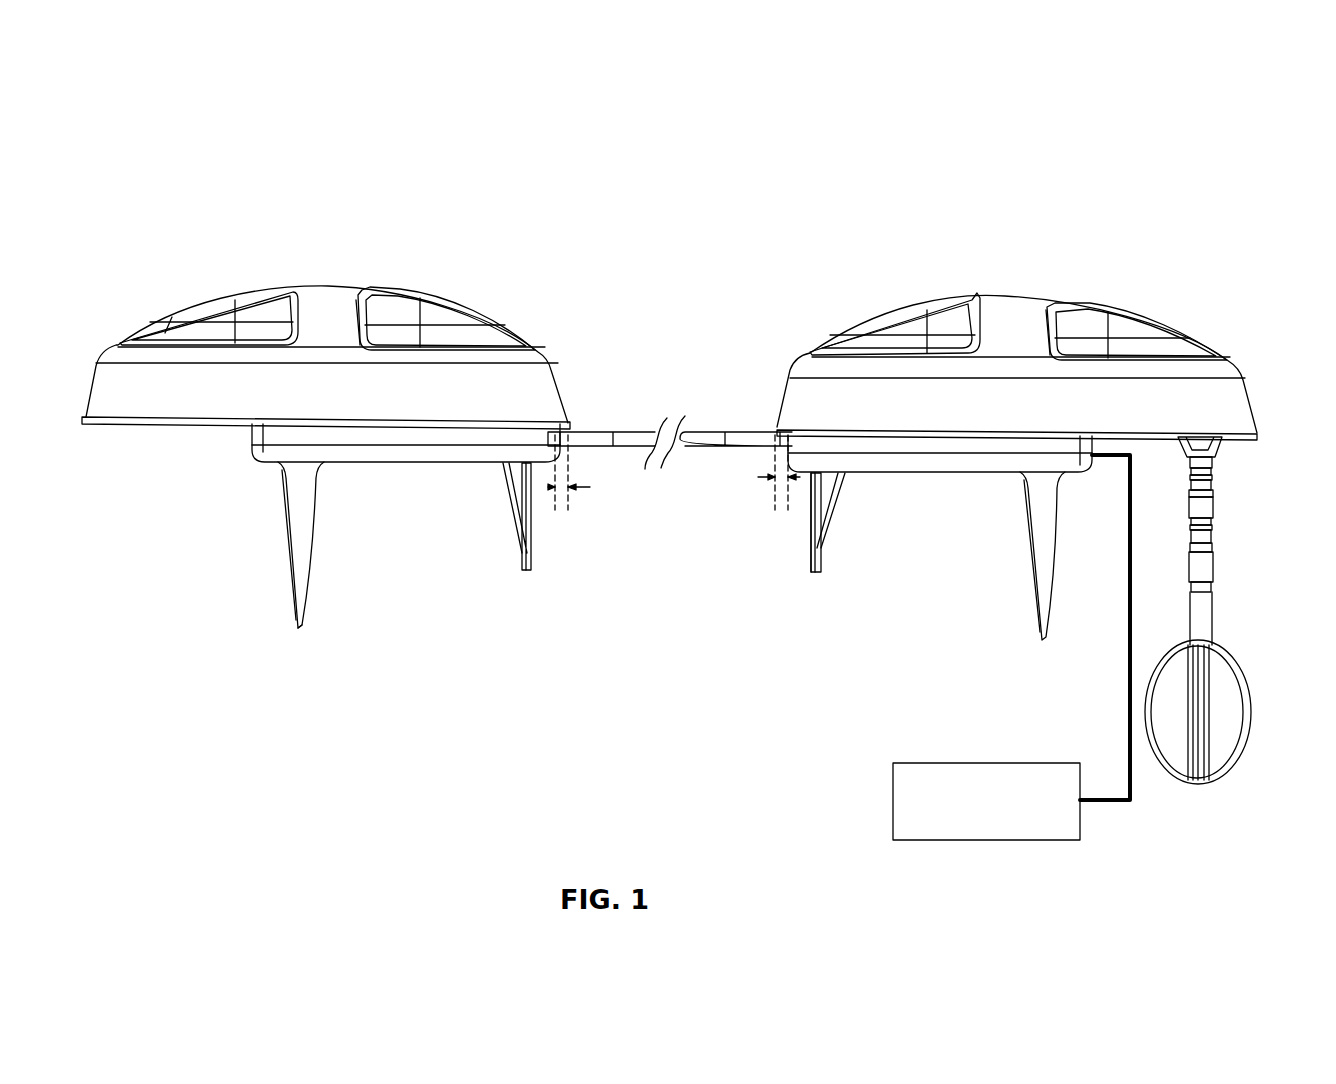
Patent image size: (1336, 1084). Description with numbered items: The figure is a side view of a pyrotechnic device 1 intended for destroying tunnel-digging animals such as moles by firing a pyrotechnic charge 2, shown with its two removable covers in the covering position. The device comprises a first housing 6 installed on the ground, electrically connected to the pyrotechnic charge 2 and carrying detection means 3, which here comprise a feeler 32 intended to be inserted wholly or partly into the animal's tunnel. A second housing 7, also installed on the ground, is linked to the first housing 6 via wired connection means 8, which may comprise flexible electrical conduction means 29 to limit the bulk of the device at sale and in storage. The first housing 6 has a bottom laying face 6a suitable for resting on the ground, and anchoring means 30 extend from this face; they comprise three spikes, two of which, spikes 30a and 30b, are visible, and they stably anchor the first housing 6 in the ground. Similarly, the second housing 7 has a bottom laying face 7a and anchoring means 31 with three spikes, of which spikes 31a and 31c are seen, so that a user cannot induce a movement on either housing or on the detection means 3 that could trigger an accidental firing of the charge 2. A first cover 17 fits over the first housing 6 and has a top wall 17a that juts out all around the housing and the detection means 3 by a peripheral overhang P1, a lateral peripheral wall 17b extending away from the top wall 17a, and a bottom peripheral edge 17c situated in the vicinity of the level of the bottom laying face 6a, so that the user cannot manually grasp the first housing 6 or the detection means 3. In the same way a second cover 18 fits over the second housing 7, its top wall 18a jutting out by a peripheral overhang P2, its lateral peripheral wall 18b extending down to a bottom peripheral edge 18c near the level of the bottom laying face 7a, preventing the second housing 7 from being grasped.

The pyrotechnic device 1 is at (702, 182).
The pyrotechnic charge 2 is at (985, 808).
The detection means 3 is at (1222, 620).
The first housing 6 is at (941, 450).
The bottom laying face 6a is at (920, 473).
The second housing 7 is at (448, 449).
The bottom laying face 7a is at (404, 463).
The wired connection means 8 is at (688, 455).
The first cover 17 is at (1175, 306).
The top wall 17a is at (1000, 316).
The lateral peripheral wall 17b is at (800, 395).
The bottom peripheral edge 17c is at (1260, 436).
The second cover 18 is at (500, 296).
The top wall 18a is at (330, 297).
The lateral peripheral wall 18b is at (553, 385).
The bottom peripheral edge 18c is at (125, 428).
The flexible electrical conduction means 29 is at (636, 433).
The anchoring means 30 is at (838, 554).
The spike 30a is at (812, 545).
The spike 30b is at (1038, 600).
The anchoring means 31 is at (320, 538).
The spike 31a is at (526, 554).
The spike 31c is at (298, 615).
The feeler 32 is at (1212, 541).
The peripheral overhang P1 is at (763, 472).
The peripheral overhang P2 is at (586, 472).